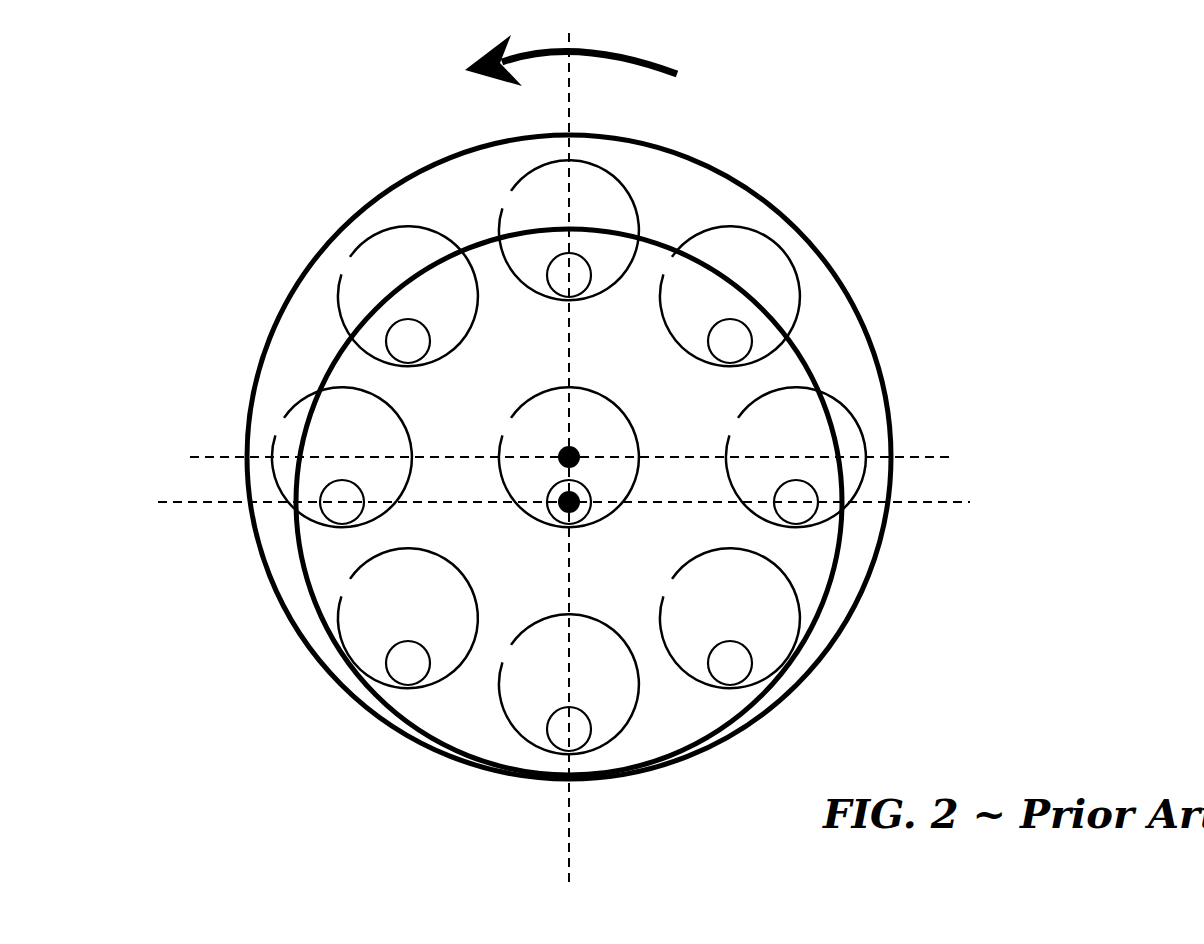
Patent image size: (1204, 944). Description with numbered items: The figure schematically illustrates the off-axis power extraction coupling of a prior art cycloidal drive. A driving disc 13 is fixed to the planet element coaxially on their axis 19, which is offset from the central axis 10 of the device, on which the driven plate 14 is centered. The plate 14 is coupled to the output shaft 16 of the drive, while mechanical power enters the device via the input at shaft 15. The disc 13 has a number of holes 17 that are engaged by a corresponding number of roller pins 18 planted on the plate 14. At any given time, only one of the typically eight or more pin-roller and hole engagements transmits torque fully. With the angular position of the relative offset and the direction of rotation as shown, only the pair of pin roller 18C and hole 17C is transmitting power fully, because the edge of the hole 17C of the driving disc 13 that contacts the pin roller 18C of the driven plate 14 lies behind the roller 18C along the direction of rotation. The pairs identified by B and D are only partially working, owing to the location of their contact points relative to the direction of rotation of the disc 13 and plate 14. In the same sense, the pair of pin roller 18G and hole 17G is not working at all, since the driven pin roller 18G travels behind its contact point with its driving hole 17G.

The central axis 10 is at (566, 512).
The disc 13 is at (719, 168).
The plate 14 is at (800, 352).
The input shaft 15 is at (553, 491).
The output shaft 16 is at (553, 394).
The holes 17 is at (636, 208).
The hole 17C is at (855, 422).
The hole 17G is at (292, 412).
The roller pins 18 is at (591, 717).
The pin roller 18C is at (811, 518).
The pin roller 18G is at (323, 485).
The axis 19 is at (557, 459).